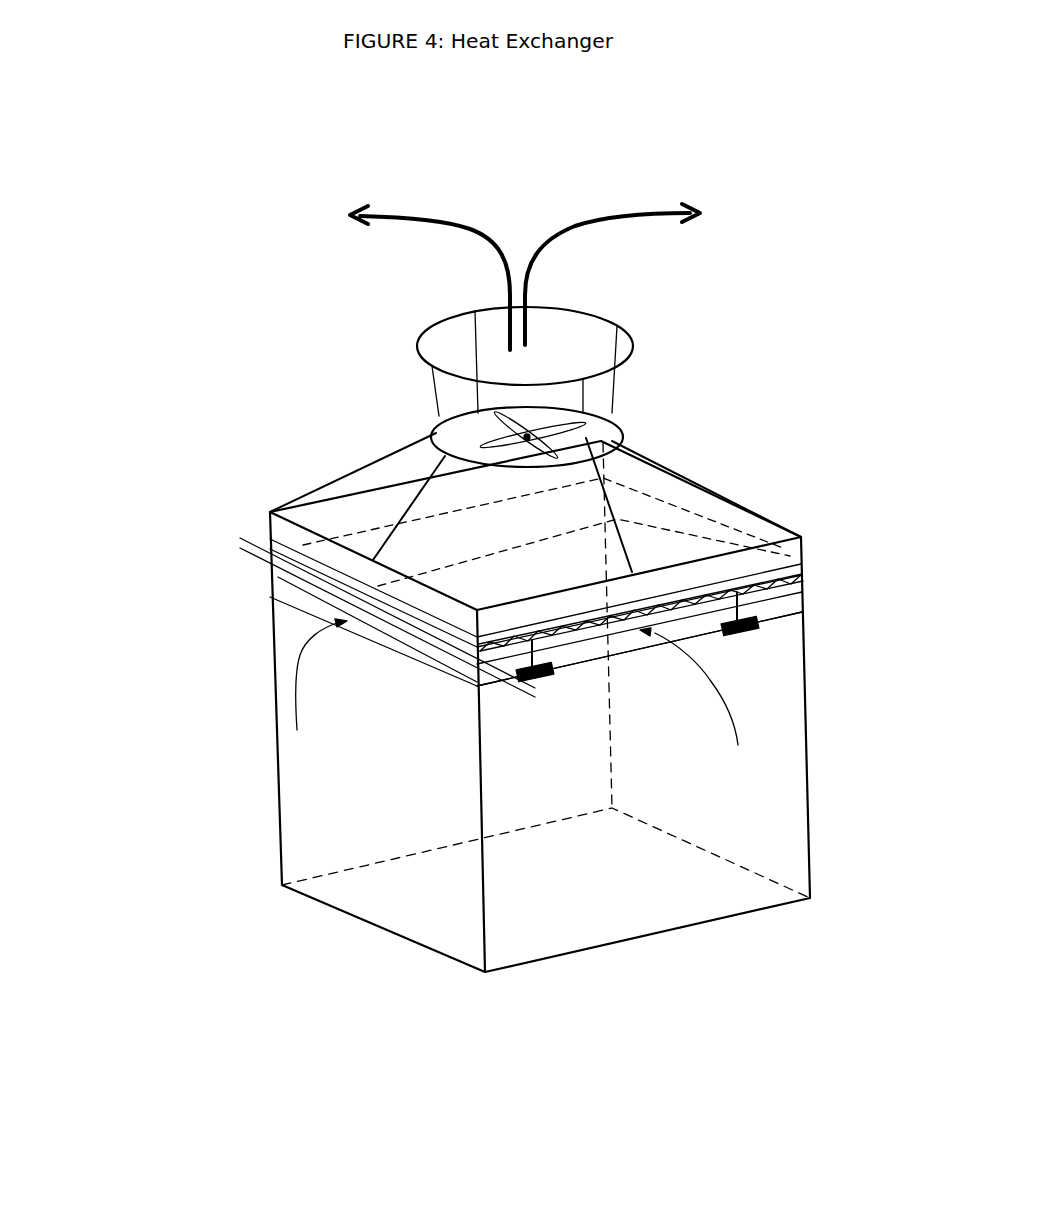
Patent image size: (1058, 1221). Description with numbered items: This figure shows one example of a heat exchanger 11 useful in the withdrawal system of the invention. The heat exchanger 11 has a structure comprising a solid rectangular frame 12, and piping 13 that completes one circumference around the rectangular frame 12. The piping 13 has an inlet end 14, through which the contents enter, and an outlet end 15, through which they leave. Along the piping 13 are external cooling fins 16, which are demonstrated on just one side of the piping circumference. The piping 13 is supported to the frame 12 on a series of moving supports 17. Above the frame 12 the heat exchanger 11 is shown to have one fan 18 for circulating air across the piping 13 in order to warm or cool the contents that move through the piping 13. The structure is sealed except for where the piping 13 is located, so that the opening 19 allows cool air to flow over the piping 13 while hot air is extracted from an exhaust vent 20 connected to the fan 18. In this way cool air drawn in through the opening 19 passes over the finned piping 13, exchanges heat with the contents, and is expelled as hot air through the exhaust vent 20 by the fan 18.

The heat exchanger 11 is at (213, 349).
The solid rectangular frame 12 is at (568, 800).
The piping 13 is at (500, 652).
The inlet end 14 is at (538, 694).
The outlet end 15 is at (230, 537).
The external cooling fins 16 is at (803, 588).
The moving supports 17 is at (752, 612).
The fan 18 is at (560, 412).
The opening 19 is at (597, 650).
The exhaust vent 20 is at (545, 335).